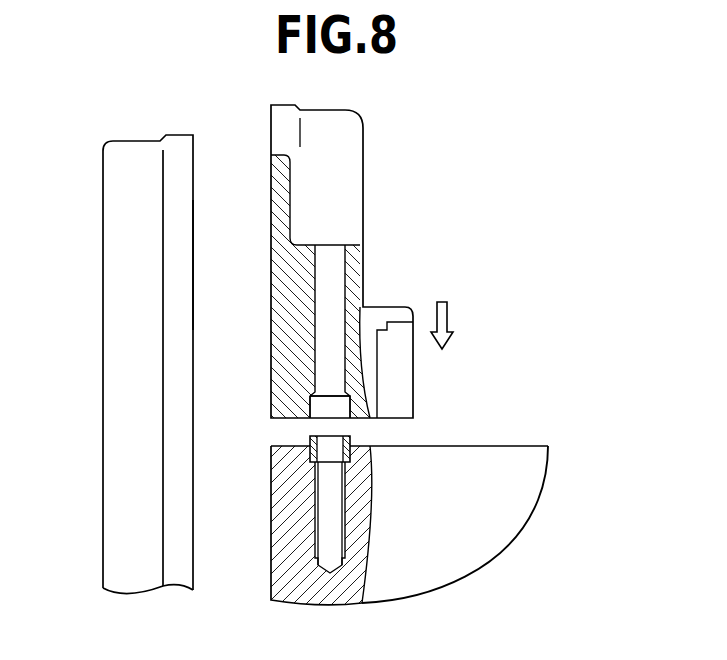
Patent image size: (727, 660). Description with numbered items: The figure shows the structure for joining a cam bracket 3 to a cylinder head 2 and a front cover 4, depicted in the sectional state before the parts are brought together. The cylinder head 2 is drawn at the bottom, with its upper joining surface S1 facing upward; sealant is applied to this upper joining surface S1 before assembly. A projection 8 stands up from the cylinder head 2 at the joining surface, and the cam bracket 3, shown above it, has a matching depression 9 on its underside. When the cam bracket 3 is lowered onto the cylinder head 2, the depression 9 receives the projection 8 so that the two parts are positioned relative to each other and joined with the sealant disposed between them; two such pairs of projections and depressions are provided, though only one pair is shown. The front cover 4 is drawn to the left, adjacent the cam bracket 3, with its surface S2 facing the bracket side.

The cylinder head 2 is at (482, 535).
The cam bracket 3 is at (392, 308).
The front cover 4 is at (111, 145).
The projection 8 is at (355, 441).
The depression 9 is at (337, 413).
The upper joining surface S1 is at (513, 446).
The surface of panel S2 is at (194, 265).